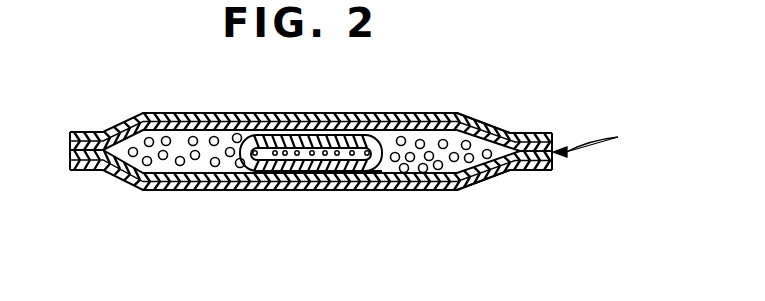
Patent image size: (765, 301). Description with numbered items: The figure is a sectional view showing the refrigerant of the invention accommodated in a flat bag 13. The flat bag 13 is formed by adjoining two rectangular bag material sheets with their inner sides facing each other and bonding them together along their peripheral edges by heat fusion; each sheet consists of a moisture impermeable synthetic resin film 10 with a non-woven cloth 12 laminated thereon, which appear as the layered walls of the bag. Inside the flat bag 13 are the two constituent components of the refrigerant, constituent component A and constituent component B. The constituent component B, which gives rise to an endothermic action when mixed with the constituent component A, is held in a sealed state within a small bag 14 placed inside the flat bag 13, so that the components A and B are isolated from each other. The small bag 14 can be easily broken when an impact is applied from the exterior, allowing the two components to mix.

The moisture impermeable synthetic resin film 10 is at (493, 131).
The non-woven cloth 12 is at (441, 117).
The flat bag 13 is at (602, 138).
The small bag 14 is at (375, 168).
The constituent component A is at (215, 136).
The constituent component B is at (312, 172).